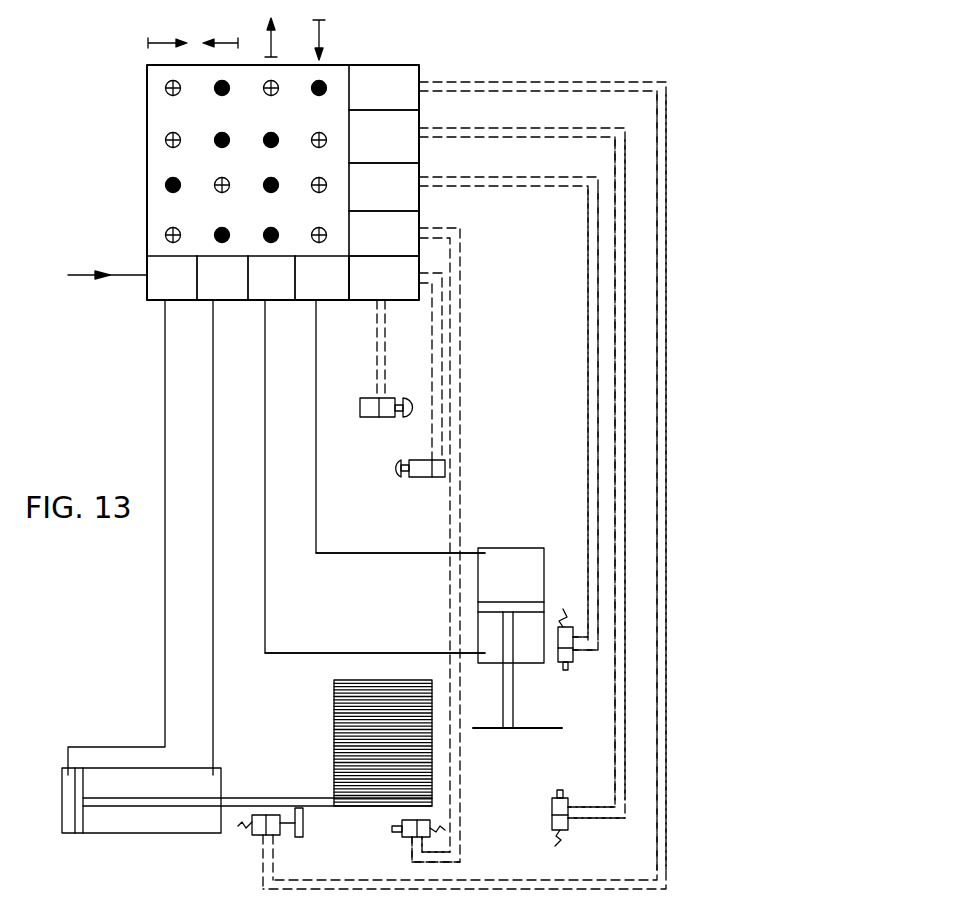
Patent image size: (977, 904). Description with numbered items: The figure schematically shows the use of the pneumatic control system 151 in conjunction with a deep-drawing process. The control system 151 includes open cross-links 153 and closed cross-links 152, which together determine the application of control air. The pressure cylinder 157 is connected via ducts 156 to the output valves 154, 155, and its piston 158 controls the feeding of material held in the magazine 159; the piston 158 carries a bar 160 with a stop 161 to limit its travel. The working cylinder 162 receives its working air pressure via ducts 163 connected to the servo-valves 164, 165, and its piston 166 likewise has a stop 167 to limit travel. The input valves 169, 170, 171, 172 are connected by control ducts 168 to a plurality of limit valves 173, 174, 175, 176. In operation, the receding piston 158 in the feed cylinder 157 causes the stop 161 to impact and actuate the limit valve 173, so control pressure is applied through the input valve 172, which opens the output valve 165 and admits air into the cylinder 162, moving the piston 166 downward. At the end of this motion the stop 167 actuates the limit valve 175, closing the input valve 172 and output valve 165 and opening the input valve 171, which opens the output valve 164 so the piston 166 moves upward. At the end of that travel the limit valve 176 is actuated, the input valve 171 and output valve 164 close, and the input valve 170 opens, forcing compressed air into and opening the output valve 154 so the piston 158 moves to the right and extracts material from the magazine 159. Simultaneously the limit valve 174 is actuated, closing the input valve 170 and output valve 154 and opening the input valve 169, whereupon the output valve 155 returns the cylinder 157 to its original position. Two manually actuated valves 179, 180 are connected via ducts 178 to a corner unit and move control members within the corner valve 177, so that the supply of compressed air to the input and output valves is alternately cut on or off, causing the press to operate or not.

The control system 151 is at (165, 113).
The closed cross-links 152 is at (213, 187).
The open cross-links 153 is at (163, 187).
The output valve 154 is at (155, 283).
The output valve 155 is at (210, 288).
The ducts 156 is at (213, 418).
The pressure cylinder 157 is at (140, 822).
The piston 158 is at (72, 817).
The magazine 159 is at (334, 707).
The bar 160 is at (247, 803).
The stop 161 is at (302, 822).
The working cylinder 162 is at (502, 552).
The ducts 163 is at (410, 653).
The servo-valve 164 is at (278, 290).
The servo-valve 165 is at (328, 290).
The piston 166 is at (510, 687).
The stop 167 is at (537, 728).
The control ducts 168 is at (590, 297).
The input valve 169 is at (400, 233).
The input valve 170 is at (405, 180).
The input valve 171 is at (405, 130).
The input valve 172 is at (397, 80).
The limit valve 173 is at (253, 835).
The limit valve 174 is at (415, 837).
The limit valve 175 is at (570, 823).
The limit valve 176 is at (568, 643).
The corner valve 177 is at (400, 295).
The ducts 178 is at (432, 375).
The manually actuated valve 179 is at (365, 407).
The manually actuated valve 180 is at (425, 477).